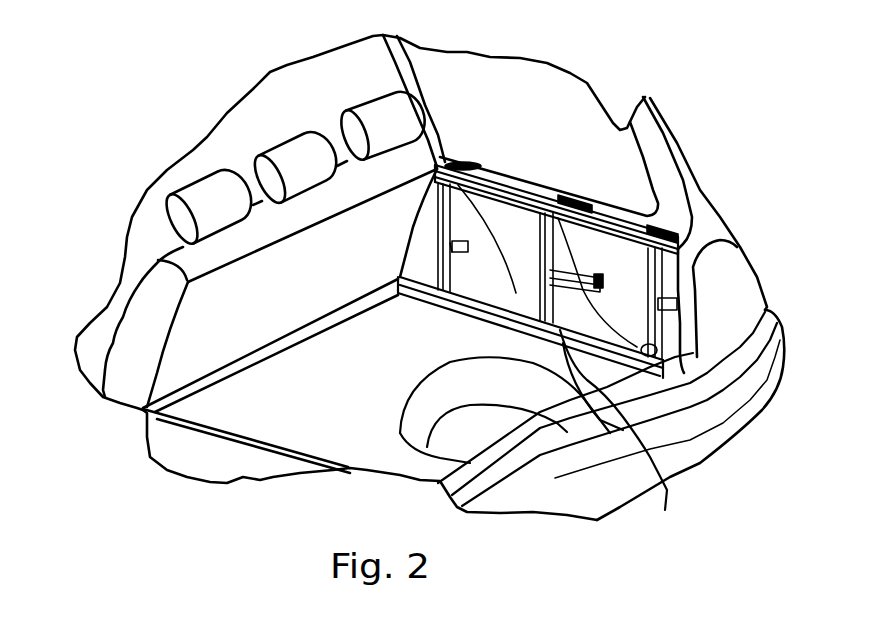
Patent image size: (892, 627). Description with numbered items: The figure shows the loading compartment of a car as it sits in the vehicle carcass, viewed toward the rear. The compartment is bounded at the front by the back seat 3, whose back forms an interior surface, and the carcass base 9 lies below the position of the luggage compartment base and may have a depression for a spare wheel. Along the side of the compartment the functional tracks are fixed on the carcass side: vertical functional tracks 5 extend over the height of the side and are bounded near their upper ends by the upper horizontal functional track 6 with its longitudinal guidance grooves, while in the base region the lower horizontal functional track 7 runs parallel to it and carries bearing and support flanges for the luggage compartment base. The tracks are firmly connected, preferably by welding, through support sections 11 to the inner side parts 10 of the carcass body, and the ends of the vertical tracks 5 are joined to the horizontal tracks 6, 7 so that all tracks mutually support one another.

The back seat 3 is at (311, 294).
The vertical functional track 5 is at (428, 292).
The upper horizontal functional track 6 is at (610, 210).
The lower horizontal functional track 7 is at (537, 435).
The carcass base 9 is at (351, 393).
The inner side part of the carcass body 10 is at (543, 185).
The support section 11 is at (466, 163).